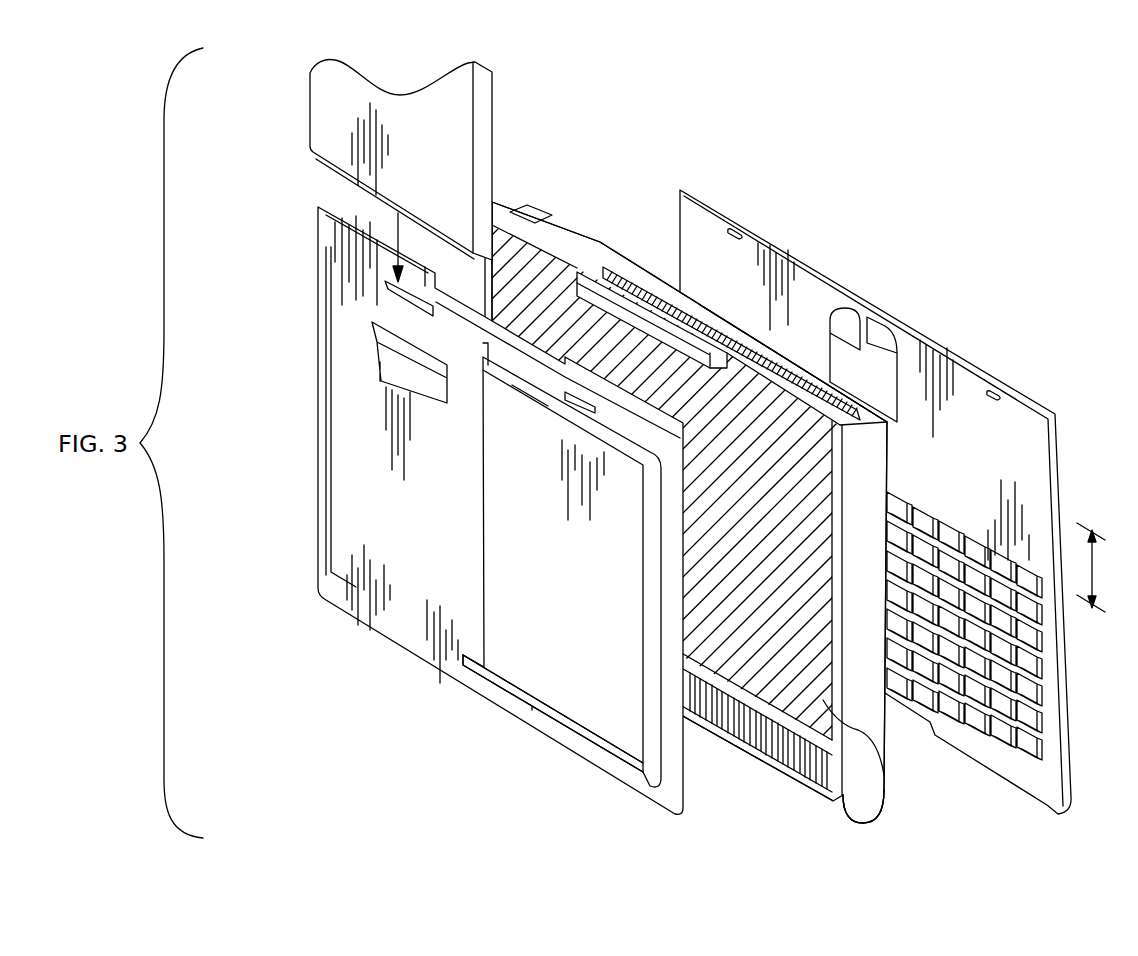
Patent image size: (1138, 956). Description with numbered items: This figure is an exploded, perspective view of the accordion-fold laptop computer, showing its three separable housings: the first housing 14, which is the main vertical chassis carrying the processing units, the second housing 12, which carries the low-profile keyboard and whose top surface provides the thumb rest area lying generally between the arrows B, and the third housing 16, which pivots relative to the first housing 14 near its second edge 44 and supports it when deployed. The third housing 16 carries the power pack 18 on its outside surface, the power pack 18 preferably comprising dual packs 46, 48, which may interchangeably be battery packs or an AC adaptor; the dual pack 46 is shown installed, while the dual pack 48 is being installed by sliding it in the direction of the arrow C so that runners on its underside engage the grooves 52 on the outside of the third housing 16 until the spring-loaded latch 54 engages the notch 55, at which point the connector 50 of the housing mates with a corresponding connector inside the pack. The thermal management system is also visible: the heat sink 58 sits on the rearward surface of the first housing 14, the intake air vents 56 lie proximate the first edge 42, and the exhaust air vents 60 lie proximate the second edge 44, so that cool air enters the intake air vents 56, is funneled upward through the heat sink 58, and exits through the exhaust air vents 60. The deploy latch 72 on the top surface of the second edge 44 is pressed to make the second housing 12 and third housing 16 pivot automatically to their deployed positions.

The second housing 12 is at (1027, 427).
The first housing 14 is at (583, 227).
The third housing 16 is at (318, 432).
The power pack 18 is at (510, 667).
The first edge 42 is at (863, 808).
The second edge 44 is at (602, 244).
The dual pack 46 is at (597, 722).
The dual pack 48 is at (322, 118).
The connector 50 is at (380, 366).
The grooves 52 is at (332, 574).
The spring-loaded latch 54 is at (572, 407).
The notch 55 is at (385, 287).
The intake air vents 56 is at (776, 749).
The heat sink 58 is at (886, 778).
The exhaust air vents 60 is at (755, 335).
The deploy latch 72 is at (533, 212).
The arrows B is at (1095, 567).
The arrow C is at (328, 222).